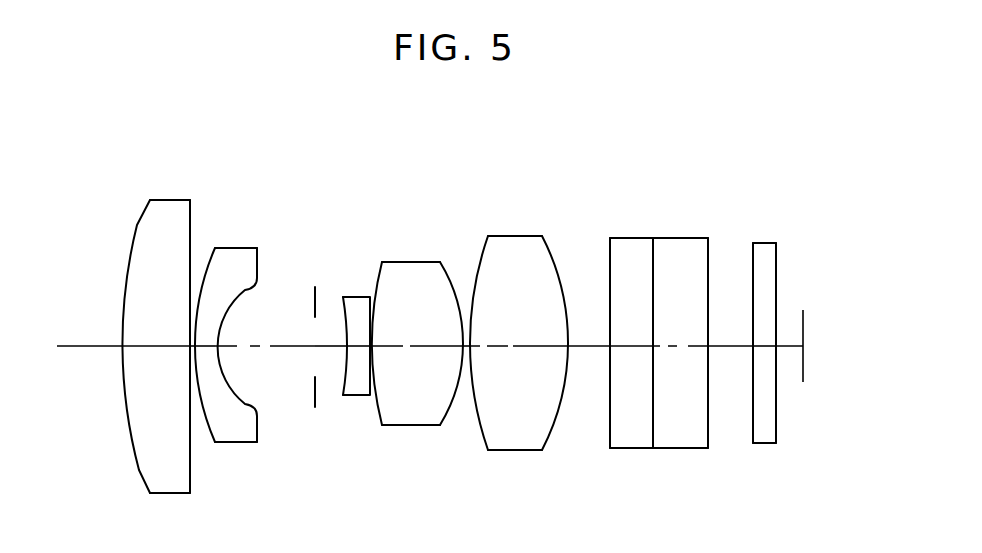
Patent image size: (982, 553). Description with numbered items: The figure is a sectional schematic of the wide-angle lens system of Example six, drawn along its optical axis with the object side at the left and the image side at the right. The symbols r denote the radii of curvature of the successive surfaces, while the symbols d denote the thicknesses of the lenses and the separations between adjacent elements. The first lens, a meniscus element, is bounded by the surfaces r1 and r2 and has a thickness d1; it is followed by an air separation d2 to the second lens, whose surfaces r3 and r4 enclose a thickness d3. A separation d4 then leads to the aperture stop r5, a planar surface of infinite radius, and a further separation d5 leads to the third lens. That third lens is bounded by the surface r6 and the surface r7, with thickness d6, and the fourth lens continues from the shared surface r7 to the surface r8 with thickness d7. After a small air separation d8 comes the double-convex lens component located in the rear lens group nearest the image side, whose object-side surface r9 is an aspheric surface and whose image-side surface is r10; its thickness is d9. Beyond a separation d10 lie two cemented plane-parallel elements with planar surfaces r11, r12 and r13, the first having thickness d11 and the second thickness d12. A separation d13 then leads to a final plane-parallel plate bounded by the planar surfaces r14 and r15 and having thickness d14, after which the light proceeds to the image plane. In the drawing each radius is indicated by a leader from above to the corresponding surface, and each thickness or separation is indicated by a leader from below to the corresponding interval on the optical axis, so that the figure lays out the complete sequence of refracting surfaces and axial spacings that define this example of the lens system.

The radius of curvature of first lens surface r1 is at (145, 218).
The radius of curvature of second lens surface r2 is at (189, 252).
The radius of curvature of third lens surface r3 is at (206, 268).
The radius of curvature of fourth lens surface r4 is at (243, 289).
The stop surface r5 is at (313, 297).
The radius of curvature of sixth lens surface r6 is at (345, 325).
The radius of curvature of seventh lens surface r7 is at (373, 315).
The radius of curvature of eighth lens surface r8 is at (452, 287).
The aspheric object-side surface of rear double-convex lens r9 is at (483, 255).
The radius of curvature of tenth lens surface r10 is at (546, 246).
The radius of curvature of eleventh surface r11 is at (610, 258).
The radius of curvature of twelfth surface r12 is at (653, 258).
The radius of curvature of thirteenth surface r13 is at (708, 258).
The radius of curvature of fourteenth surface r14 is at (753, 262).
The radius of curvature of fifteenth surface r15 is at (776, 262).
The thickness of first lens d1 is at (157, 346).
The separation between first and second lenses d2 is at (190, 352).
The thickness of second lens d3 is at (202, 347).
The separation between second lens and stop d4 is at (281, 347).
The separation between stop and third lens d5 is at (328, 347).
The thickness of third lens d6 is at (358, 347).
The thickness of fourth lens d7 is at (415, 347).
The separation between fourth and fifth lenses d8 is at (470, 347).
The thickness of fifth lens d9 is at (520, 347).
The separation between fifth lens and plane-parallel element d10 is at (587, 347).
The thickness of first plane-parallel element d11 is at (630, 347).
The thickness of second plane-parallel element d12 is at (677, 347).
The separation between plane-parallel elements and plate d13 is at (728, 347).
The thickness of final plate d14 is at (763, 347).